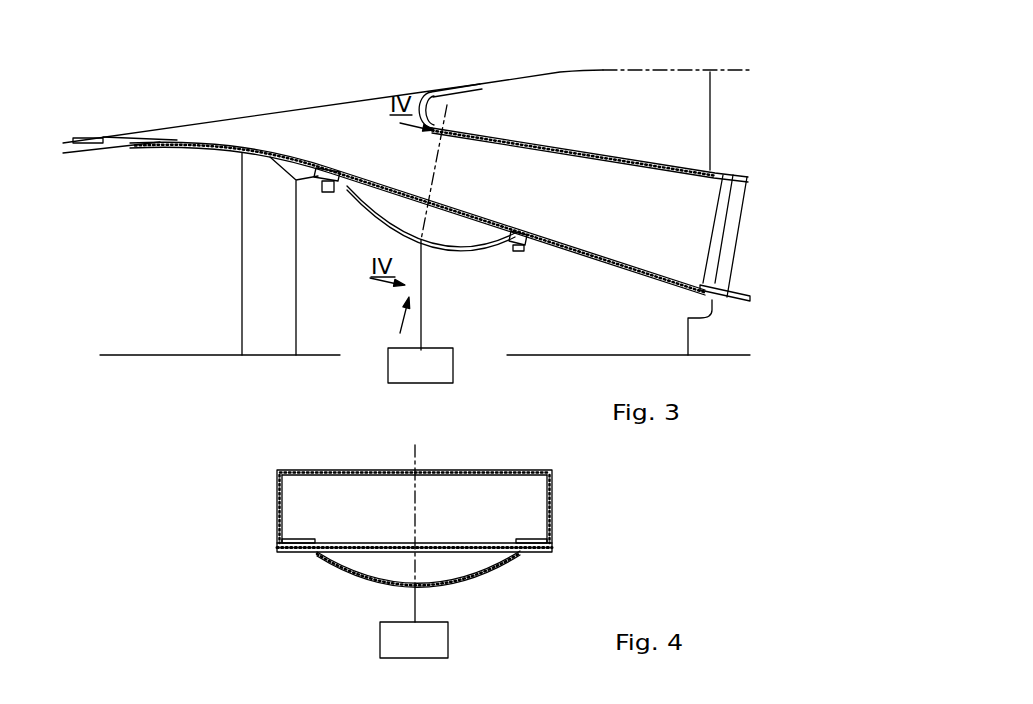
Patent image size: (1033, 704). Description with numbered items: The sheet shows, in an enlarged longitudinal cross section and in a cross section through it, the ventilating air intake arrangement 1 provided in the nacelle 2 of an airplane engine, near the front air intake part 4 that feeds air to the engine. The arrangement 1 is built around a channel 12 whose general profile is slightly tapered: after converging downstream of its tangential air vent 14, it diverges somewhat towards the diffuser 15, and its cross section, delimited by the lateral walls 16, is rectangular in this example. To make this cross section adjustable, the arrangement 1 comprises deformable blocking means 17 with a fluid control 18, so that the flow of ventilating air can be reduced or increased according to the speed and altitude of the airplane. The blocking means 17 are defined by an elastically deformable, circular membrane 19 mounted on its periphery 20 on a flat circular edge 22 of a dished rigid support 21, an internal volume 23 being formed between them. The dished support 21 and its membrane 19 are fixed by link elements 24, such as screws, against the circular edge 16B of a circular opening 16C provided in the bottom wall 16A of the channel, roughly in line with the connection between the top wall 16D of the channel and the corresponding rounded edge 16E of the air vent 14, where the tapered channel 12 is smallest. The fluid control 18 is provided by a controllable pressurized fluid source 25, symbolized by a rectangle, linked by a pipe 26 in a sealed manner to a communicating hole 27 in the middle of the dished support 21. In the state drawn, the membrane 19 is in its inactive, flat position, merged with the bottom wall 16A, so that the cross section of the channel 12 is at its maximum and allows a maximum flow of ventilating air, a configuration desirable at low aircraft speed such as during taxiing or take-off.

In FIG. 3, the ventilating air intake arrangement 1 is at (282, 77).
In FIG. 4, the ventilating air intake arrangement 1 is at (256, 465).
In FIG. 3, the nacelle 2 is at (676, 62).
In FIG. 3, the front air intake part 4 is at (131, 350).
In FIG. 3, the channel 12 is at (571, 203).
In FIG. 4, the channel 12 is at (457, 515).
In FIG. 3, the tangential air vent 14 is at (255, 118).
In FIG. 3, the diffuser 15 is at (740, 277).
In FIG. 4, the lateral walls 16 is at (567, 472).
In FIG. 3, the bottom wall 16A is at (617, 240).
In FIG. 4, the bottom wall 16A is at (520, 550).
In FIG. 4, the circular edge 16B is at (307, 540).
In FIG. 3, the circular opening 16C is at (363, 173).
In FIG. 4, the circular opening 16C is at (347, 542).
In FIG. 3, the top wall 16D is at (552, 150).
In FIG. 4, the top wall 16D is at (468, 470).
In FIG. 3, the rounded edge 16E is at (423, 93).
In FIG. 3, the deformable blocking means 17 is at (460, 256).
In FIG. 3, the fluid control 18 is at (368, 374).
In FIG. 3, the membrane 19 is at (390, 193).
In FIG. 4, the membrane 19 is at (467, 548).
In FIG. 4, the periphery 20 is at (550, 548).
In FIG. 3, the dished rigid support 21 is at (357, 197).
In FIG. 4, the dished rigid support 21 is at (355, 575).
In FIG. 4, the flat circular edge 22 is at (532, 553).
In FIG. 3, the internal volume 23 is at (455, 235).
In FIG. 4, the internal volume 23 is at (403, 571).
In FIG. 3, the link elements 24 is at (522, 249).
In FIG. 3, the controllable pressurized fluid source 25 is at (455, 368).
In FIG. 4, the controllable pressurized fluid source 25 is at (380, 650).
In FIG. 3, the pipe 26 is at (421, 310).
In FIG. 4, the communicating hole 27 is at (417, 590).